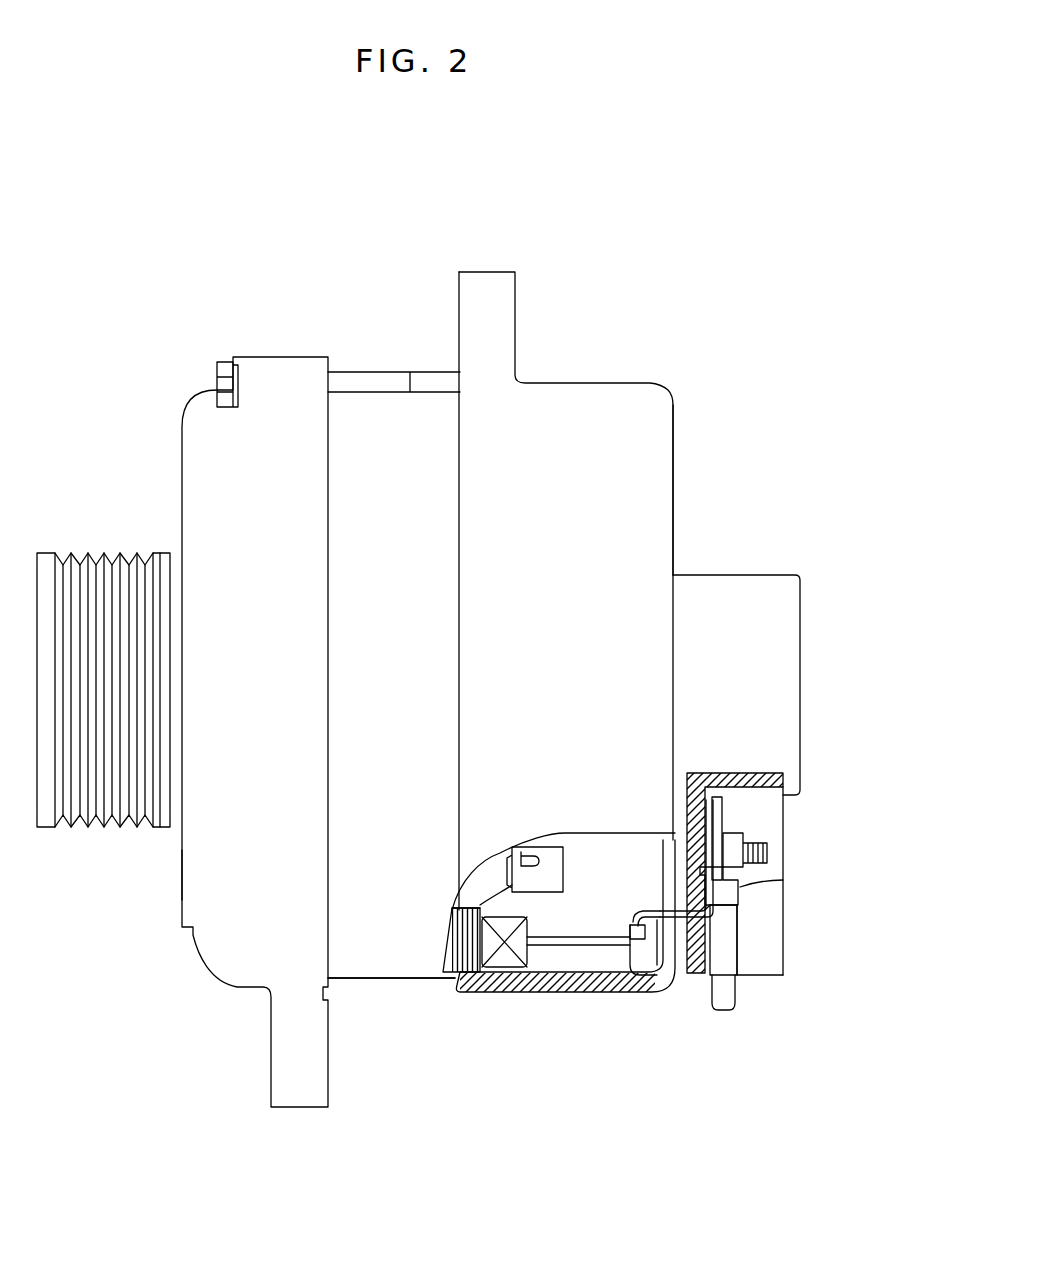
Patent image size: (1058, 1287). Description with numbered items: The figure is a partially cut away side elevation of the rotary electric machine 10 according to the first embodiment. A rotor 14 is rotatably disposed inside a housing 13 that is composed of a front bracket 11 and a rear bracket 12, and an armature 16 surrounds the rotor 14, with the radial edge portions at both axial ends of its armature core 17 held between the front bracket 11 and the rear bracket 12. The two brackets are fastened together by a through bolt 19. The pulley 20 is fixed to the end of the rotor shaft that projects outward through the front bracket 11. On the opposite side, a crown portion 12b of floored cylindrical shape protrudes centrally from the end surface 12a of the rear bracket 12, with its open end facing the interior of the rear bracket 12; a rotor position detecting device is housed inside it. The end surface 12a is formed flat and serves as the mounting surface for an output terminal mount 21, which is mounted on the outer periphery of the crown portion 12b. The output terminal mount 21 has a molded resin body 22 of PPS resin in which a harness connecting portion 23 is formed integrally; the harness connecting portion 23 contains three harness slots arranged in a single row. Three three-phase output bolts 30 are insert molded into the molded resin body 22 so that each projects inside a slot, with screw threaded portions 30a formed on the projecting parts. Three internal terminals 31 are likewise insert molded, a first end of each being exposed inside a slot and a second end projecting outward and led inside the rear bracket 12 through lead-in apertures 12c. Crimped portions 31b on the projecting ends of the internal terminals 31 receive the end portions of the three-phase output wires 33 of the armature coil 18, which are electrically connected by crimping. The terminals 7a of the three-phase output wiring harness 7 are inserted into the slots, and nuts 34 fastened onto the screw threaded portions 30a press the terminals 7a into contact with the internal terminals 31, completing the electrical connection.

The rotary electric machine 10 is at (213, 151).
The front bracket 11 is at (198, 414).
The rear bracket 12 is at (652, 477).
The end surface 12a is at (677, 445).
The crown portion 12b is at (733, 590).
The lead-in apertures 12c is at (652, 915).
The housing 13 is at (176, 868).
The rotor 14 is at (494, 868).
The armature 16 is at (492, 1083).
The armature core 17 is at (392, 965).
The armature coil 18 is at (500, 993).
The through bolt 19 is at (370, 382).
The pulley 20 is at (95, 562).
The output terminal mount 21 is at (783, 950).
The molded resin body 22 is at (792, 928).
The harness connecting portion 23 is at (762, 962).
The three-phase output bolts 30 is at (755, 836).
The screw threaded portions 30a is at (752, 838).
The internal terminals 31 is at (660, 980).
The crimped portions 31b is at (643, 980).
The three-phase output wires 33 is at (575, 980).
The nuts 34 is at (742, 880).
The three-phase output wiring harness 7 is at (725, 1003).
The terminals 7a is at (718, 842).